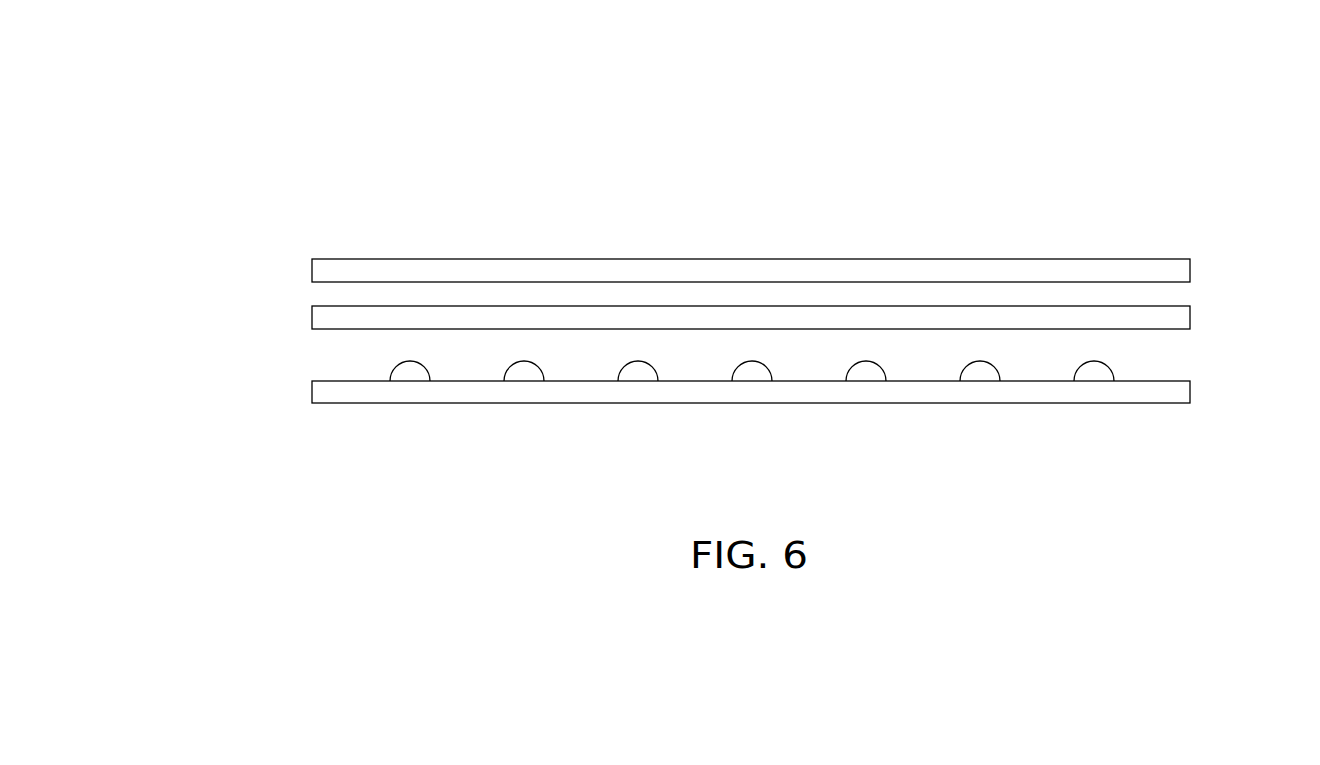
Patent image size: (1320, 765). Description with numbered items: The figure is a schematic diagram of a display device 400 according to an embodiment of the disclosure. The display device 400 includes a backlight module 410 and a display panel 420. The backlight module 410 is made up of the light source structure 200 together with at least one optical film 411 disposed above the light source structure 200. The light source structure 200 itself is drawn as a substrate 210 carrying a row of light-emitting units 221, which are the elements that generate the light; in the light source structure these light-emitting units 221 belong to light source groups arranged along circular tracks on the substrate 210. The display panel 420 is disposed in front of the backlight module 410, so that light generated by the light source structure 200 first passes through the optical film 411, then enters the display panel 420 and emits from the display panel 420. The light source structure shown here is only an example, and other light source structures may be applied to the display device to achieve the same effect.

The display device 400 is at (252, 74).
The backlight module 410 is at (207, 293).
The optical film 411 is at (323, 316).
The display panel 420 is at (323, 268).
The light source structure 200 is at (328, 378).
The substrate 210 is at (1181, 391).
The light-emitting units 221 is at (1102, 367).